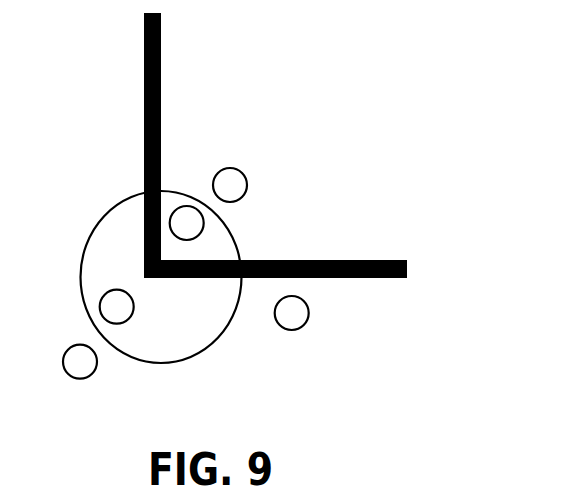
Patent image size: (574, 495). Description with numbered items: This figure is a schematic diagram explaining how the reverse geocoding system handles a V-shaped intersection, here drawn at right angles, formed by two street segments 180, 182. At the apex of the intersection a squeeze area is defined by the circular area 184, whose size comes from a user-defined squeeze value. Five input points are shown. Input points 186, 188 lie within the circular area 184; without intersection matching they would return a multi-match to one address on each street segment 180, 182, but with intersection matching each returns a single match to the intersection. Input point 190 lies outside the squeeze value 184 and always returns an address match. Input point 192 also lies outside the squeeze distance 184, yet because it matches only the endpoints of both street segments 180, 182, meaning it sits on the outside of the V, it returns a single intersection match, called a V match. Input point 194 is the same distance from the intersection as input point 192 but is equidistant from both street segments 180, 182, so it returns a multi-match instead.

The street segment 180 is at (144, 103).
The street segment 182 is at (293, 258).
The circular area 184 is at (102, 218).
The input point 186 is at (188, 206).
The input point 188 is at (118, 290).
The input point 190 is at (302, 330).
The input point 192 is at (92, 377).
The input point 194 is at (242, 172).